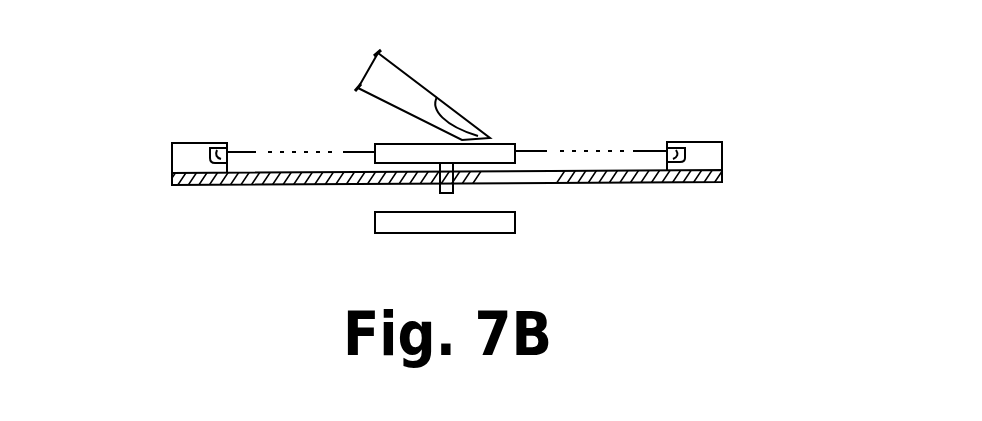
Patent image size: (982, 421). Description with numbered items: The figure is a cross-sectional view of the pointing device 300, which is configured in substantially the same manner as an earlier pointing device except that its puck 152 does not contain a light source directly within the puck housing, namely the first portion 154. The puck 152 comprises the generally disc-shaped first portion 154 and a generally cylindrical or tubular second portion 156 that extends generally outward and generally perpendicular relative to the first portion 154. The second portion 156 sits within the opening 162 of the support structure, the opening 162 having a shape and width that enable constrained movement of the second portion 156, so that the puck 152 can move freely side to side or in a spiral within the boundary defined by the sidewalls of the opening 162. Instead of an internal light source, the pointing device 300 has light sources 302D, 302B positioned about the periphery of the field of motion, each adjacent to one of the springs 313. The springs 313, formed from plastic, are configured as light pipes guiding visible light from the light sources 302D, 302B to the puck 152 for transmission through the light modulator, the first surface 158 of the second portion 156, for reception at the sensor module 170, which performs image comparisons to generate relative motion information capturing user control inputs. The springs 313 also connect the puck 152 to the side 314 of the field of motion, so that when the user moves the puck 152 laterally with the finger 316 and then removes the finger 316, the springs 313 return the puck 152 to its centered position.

The pointing device 300 is at (125, 94).
The light source 302D is at (222, 143).
The light source 302B is at (672, 143).
The side of the puck field of motion 314 is at (702, 145).
The first portion 154 is at (388, 145).
The spring 313 is at (527, 147).
The finger 316 is at (412, 78).
The puck 152 is at (503, 120).
The opening 162 is at (475, 178).
The second portion 156 is at (440, 188).
The first surface 158 is at (455, 188).
The sensor module 170 is at (515, 218).